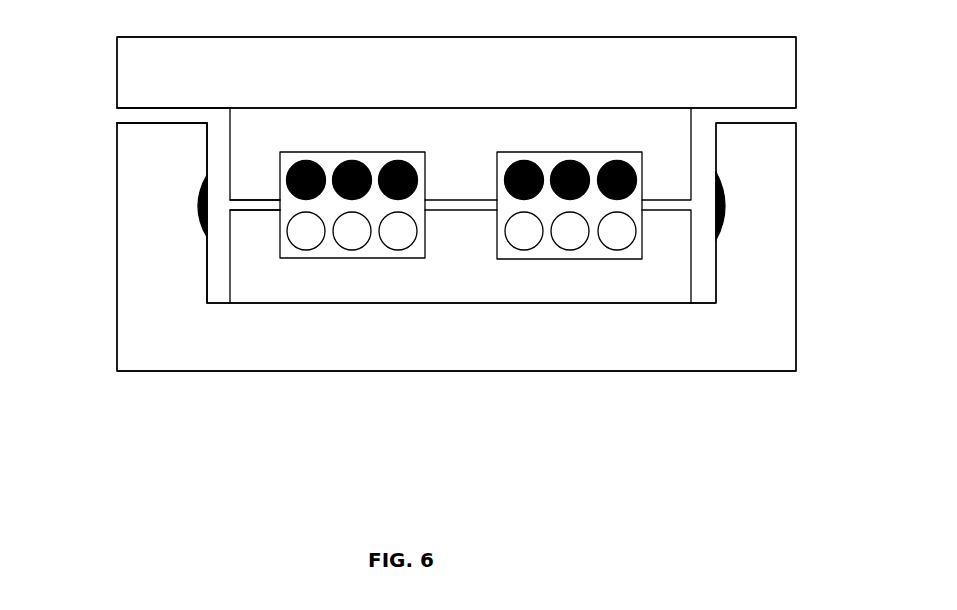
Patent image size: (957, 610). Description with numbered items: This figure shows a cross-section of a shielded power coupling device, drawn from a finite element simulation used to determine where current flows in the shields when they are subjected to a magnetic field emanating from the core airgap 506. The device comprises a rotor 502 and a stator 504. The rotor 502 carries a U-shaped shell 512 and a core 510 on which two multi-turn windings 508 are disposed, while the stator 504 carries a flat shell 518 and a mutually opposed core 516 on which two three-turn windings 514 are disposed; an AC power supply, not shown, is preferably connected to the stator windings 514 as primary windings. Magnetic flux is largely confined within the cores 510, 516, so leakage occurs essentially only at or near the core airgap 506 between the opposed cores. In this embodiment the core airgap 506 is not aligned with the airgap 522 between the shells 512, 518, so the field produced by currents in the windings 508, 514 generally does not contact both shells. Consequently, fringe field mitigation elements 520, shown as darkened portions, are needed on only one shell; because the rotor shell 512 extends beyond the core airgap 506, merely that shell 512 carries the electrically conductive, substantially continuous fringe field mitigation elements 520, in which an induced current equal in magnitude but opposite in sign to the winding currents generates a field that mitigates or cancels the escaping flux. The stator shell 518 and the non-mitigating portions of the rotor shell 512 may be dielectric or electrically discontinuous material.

The rotor 502 is at (798, 143).
The stator 504 is at (800, 80).
The core airgap 506 is at (253, 203).
The multi-turn windings 508 is at (353, 248).
The core 510 is at (230, 285).
The shell 512 is at (117, 135).
The multi-turn windings 514 is at (347, 160).
The core 516 is at (230, 158).
The shell 518 is at (117, 55).
The fringe field mitigation elements 520 is at (198, 210).
The airgap 522 is at (176, 119).